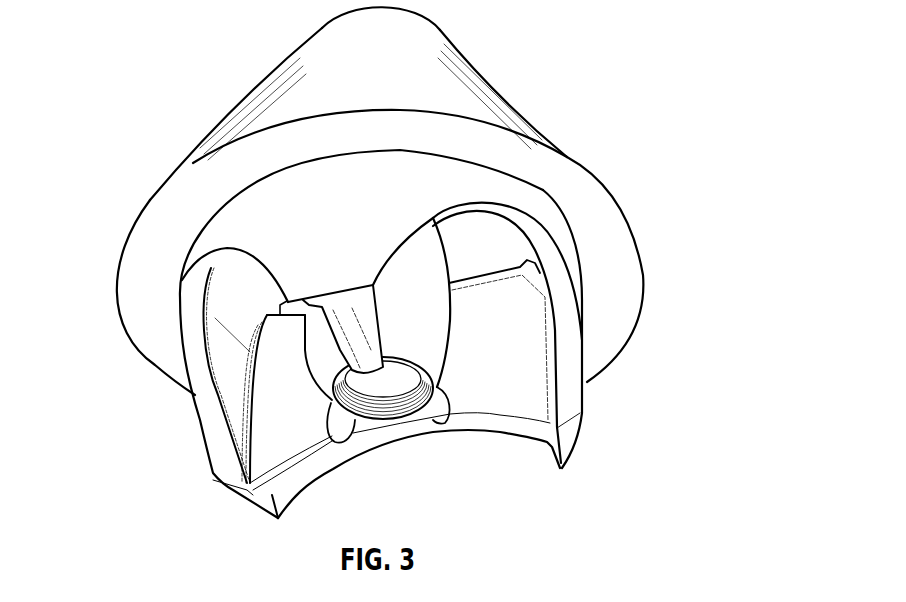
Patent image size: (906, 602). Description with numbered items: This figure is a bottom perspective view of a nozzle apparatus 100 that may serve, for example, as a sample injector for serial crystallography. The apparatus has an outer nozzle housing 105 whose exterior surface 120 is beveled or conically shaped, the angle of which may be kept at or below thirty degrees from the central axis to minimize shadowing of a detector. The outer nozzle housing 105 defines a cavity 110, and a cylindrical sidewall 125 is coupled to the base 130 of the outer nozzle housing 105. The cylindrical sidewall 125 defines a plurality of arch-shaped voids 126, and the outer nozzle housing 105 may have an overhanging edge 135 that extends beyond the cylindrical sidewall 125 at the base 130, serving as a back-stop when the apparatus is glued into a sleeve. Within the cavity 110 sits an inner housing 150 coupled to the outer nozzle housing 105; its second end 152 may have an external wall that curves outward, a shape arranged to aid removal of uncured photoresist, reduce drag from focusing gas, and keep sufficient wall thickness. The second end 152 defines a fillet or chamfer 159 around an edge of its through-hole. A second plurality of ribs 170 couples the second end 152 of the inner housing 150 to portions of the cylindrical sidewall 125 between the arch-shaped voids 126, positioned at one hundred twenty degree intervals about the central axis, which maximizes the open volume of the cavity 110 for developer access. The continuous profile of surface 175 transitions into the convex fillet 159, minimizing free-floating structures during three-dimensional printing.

The nozzle apparatus 100 is at (176, 58).
The outer nozzle housing 105 is at (488, 105).
The cavity 110 is at (473, 247).
The exterior surface 120 is at (466, 52).
The cylindrical sidewall 125 is at (258, 218).
The arch-shaped voids 126 is at (193, 342).
The base 130 is at (610, 293).
The overhanging edge 135 is at (652, 329).
The inner housing 150 is at (445, 335).
The second end 152 is at (365, 418).
The fillet or chamfer 159 is at (408, 397).
The second plurality of ribs 170 is at (340, 328).
The surface 175 is at (338, 435).